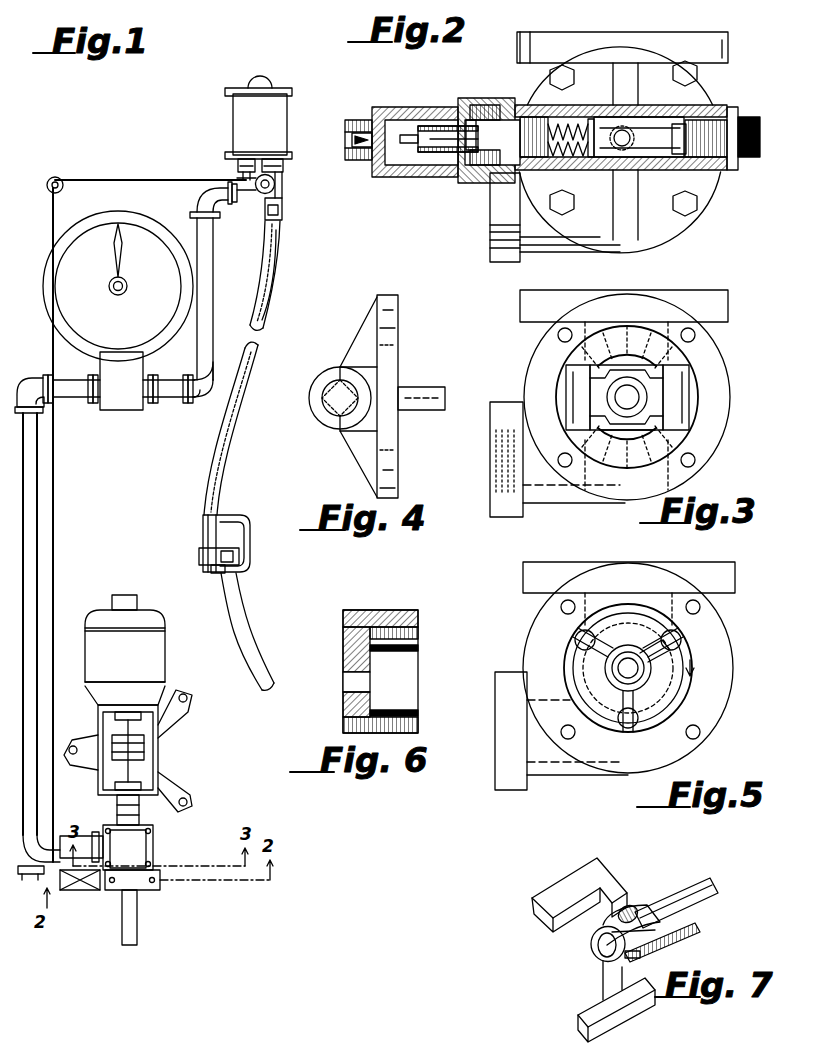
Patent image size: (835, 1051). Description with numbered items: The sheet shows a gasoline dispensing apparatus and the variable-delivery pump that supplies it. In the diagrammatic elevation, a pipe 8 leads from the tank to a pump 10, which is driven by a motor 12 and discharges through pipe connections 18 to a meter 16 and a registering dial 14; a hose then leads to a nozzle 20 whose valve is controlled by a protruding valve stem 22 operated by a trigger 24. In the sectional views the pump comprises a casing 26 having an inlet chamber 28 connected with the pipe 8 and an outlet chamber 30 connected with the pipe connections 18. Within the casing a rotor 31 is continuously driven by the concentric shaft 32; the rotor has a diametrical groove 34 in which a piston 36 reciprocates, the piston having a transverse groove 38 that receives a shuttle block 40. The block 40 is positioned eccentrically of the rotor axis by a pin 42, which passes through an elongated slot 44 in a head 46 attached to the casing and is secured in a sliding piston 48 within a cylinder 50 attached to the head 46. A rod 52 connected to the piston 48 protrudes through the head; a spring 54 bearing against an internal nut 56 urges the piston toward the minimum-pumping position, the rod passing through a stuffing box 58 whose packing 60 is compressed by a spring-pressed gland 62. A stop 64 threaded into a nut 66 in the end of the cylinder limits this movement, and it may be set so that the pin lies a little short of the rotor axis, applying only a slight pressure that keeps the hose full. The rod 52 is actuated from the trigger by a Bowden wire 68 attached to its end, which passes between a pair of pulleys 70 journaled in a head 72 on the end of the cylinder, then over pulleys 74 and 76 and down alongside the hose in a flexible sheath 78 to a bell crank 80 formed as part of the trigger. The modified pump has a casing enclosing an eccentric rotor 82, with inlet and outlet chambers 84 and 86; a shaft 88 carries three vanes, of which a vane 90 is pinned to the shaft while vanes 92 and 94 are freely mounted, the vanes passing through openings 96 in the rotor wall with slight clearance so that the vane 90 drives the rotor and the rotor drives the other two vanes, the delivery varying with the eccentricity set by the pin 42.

In FIG. 1, the pipe 8 is at (138, 940).
In FIG. 1, the pump 10 is at (150, 849).
In FIG. 1, the motor 12 is at (163, 650).
In FIG. 1, the registering dial 14 is at (136, 225).
In FIG. 1, the meter 16 is at (275, 138).
In FIG. 1, the pipe connections 18 is at (280, 250).
In FIG. 1, the nozzle 20 is at (240, 625).
In FIG. 1, the valve stem 22 is at (240, 568).
In FIG. 1, the trigger 24 is at (250, 530).
In FIG. 3, the casing 26 is at (715, 370).
In FIG. 3, the inlet chamber 28 is at (645, 308).
In FIG. 3, the outlet chamber 30 is at (490, 470).
In FIG. 3, the rotor 31 is at (668, 355).
In FIG. 1, the concentric shaft 32 is at (150, 760).
In FIG. 3, the diametrical groove 34 is at (566, 380).
In FIG. 3, the piston 36 is at (675, 413).
In FIG. 3, the transverse groove 38 is at (660, 430).
In FIG. 3, the shuttle block 40 is at (598, 403).
In FIG. 4, the pin 42 is at (426, 387).
In FIG. 2, the elongated slot 44 is at (604, 117).
In FIG. 4, the head 46 is at (388, 295).
In FIG. 2, the sliding piston 48 is at (622, 136).
In FIG. 2, the cylinder 50 is at (700, 172).
In FIG. 2, the rod 52 is at (585, 119).
In FIG. 2, the spring 54 is at (534, 117).
In FIG. 2, the internal nut 56 is at (560, 170).
In FIG. 2, the stuffing box 58 is at (490, 105).
In FIG. 2, the packing 60 is at (500, 190).
In FIG. 2, the spring-pressed gland 62 is at (445, 183).
In FIG. 2, the stop 64 is at (700, 120).
In FIG. 2, the nut 66 is at (738, 166).
In FIG. 2, the Bowden wire 68 is at (403, 135).
In FIG. 1, the pulleys 70 is at (60, 890).
In FIG. 2, the pulleys 70 is at (345, 138).
In FIG. 2, the head 72 is at (392, 178).
In FIG. 1, the pulley 74 is at (58, 177).
In FIG. 1, the pulley 76 is at (278, 186).
In FIG. 1, the flexible sheath 78 is at (275, 290).
In FIG. 1, the bell crank 80 is at (212, 572).
In FIG. 5, the bell crank 80 is at (718, 648).
In FIG. 5, the eccentric rotor 82 is at (690, 700).
In FIG. 6, the eccentric rotor 82 is at (418, 690).
In FIG. 5, the inlet chamber 84 is at (620, 578).
In FIG. 5, the outlet chamber 86 is at (495, 730).
In FIG. 5, the shaft 88 is at (620, 668).
In FIG. 7, the shaft 88 is at (698, 875).
In FIG. 7, the vane 90 is at (625, 885).
In FIG. 7, the vane 92 is at (704, 926).
In FIG. 7, the vane 94 is at (590, 1010).
In FIG. 5, the openings 96 is at (665, 656).